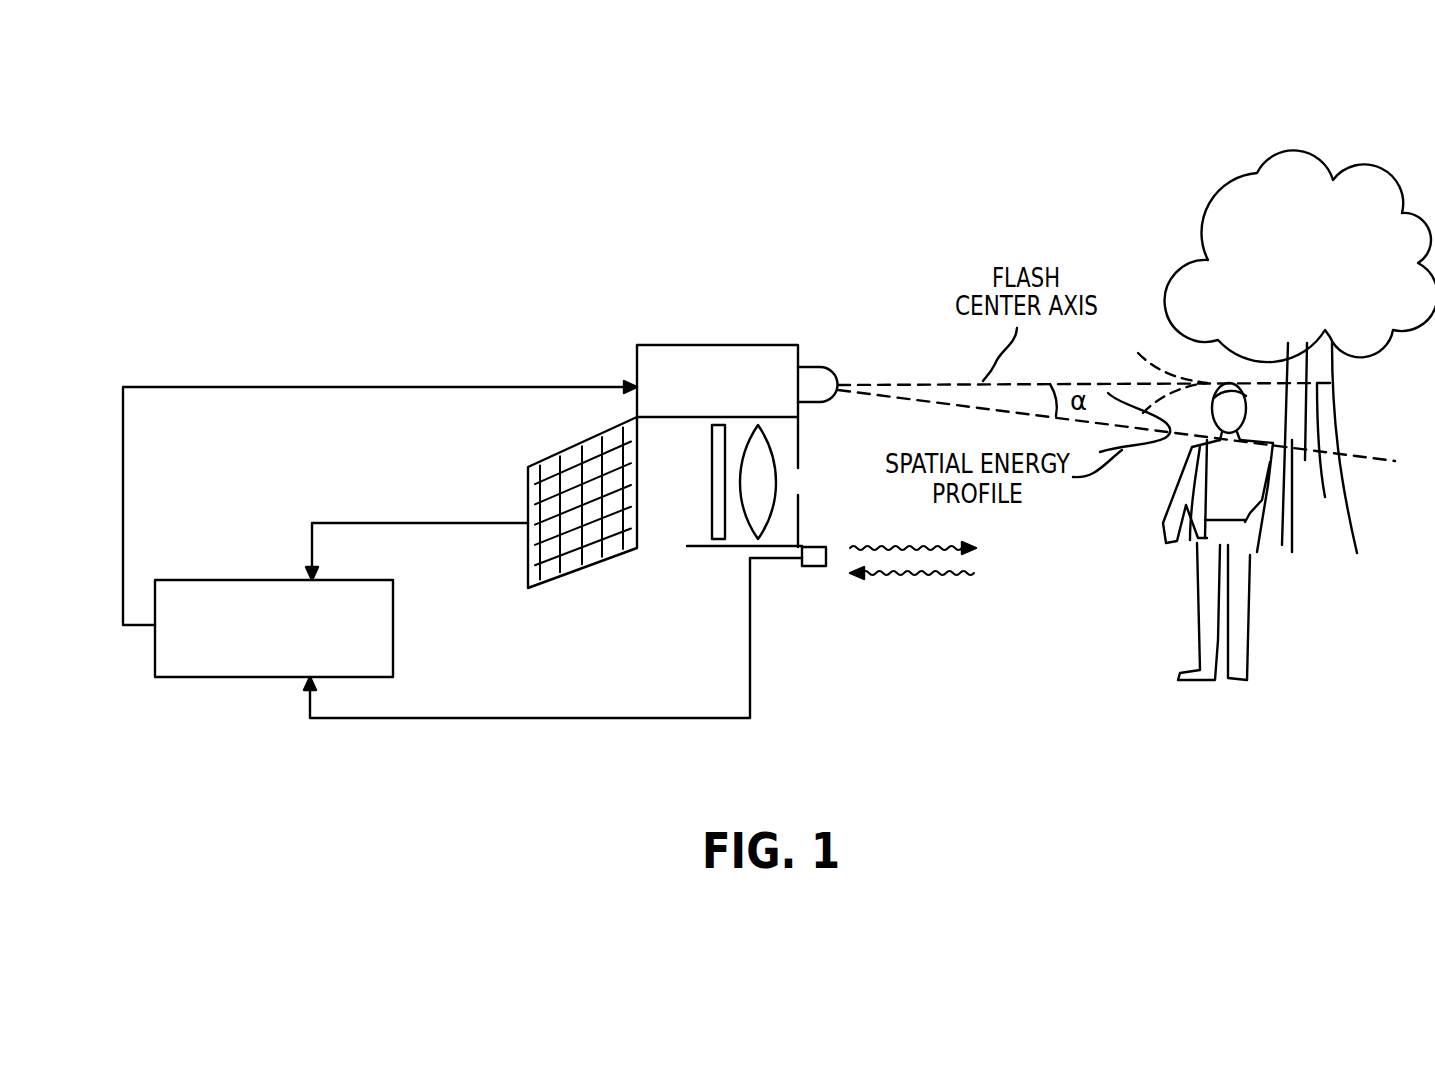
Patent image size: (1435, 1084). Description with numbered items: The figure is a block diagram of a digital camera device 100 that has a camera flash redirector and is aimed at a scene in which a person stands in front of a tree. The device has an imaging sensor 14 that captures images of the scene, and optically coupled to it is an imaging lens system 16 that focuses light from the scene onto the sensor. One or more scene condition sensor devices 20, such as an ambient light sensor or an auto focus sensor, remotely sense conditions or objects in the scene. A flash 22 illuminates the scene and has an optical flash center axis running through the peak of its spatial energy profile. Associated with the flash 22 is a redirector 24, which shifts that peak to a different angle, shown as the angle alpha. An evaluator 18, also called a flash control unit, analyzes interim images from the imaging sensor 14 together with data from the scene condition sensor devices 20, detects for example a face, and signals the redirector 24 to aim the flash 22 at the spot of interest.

The imaging sensor 14 is at (535, 465).
The imaging lens system 16 is at (712, 553).
The evaluator 18 is at (393, 634).
The scene condition sensor devices 20 is at (813, 566).
The flash 22 is at (822, 367).
The redirector 24 is at (692, 345).
The digital camera device 100 is at (386, 786).